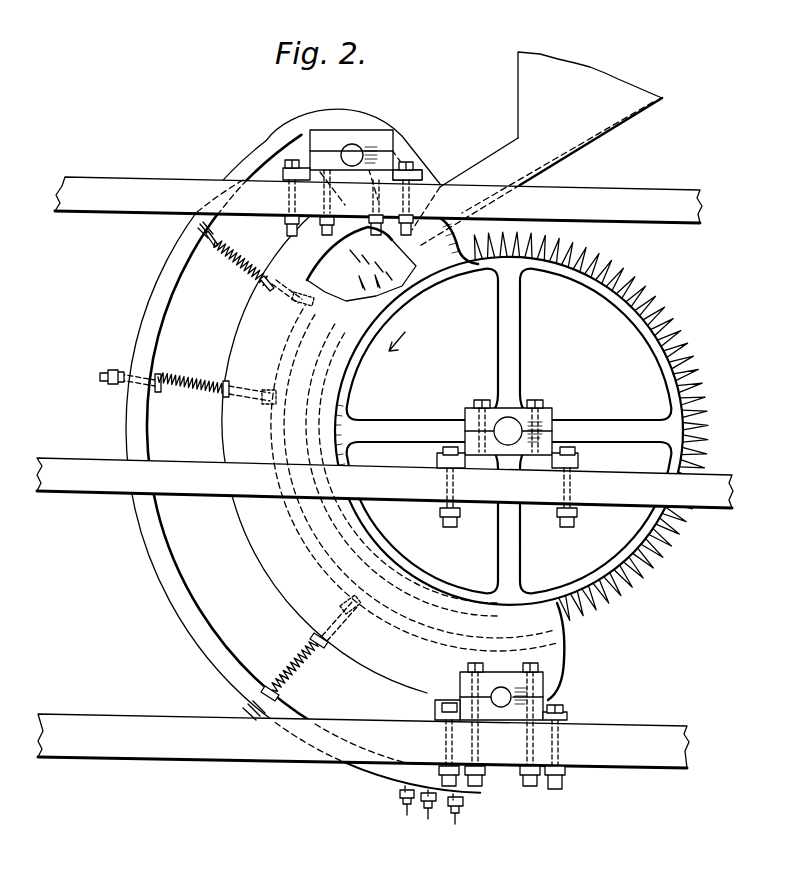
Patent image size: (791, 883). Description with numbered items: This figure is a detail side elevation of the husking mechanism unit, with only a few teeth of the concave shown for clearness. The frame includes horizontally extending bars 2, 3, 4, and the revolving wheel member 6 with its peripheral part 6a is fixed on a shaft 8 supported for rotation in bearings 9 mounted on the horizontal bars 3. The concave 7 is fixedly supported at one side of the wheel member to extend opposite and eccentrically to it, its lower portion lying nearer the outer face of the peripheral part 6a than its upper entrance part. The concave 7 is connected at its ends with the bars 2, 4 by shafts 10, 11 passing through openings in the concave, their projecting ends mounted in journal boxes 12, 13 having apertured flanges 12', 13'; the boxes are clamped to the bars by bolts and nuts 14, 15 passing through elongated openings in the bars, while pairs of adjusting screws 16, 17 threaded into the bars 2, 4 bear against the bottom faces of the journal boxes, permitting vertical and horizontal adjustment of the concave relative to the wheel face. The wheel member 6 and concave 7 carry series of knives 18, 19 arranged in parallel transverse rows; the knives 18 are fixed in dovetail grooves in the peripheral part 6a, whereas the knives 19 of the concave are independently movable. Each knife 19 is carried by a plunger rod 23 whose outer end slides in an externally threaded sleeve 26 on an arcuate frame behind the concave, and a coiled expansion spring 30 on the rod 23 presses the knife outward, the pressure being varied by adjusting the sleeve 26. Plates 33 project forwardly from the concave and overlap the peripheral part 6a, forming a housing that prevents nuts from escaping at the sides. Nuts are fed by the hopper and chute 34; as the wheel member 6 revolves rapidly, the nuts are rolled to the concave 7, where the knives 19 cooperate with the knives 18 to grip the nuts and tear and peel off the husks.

The horizontally extending bar 2 is at (378, 200).
The horizontal bar 3 is at (385, 483).
The horizontally extending bar 4 is at (363, 741).
The revolving wheel member 6 is at (513, 368).
The peripheral part 6a is at (660, 310).
The concave 7 is at (305, 268).
The shaft 8 is at (516, 425).
The bearings 9 is at (545, 442).
The shaft 10 is at (357, 149).
The shaft 11 is at (506, 688).
The journal box 12 is at (369, 132).
The apertured flange 12' is at (430, 164).
The journal box 13 is at (496, 714).
The apertured flange 13' is at (578, 708).
The bolts and nuts 14 is at (288, 160).
The bolts and nuts 15 is at (557, 704).
The adjusting screws 16 is at (351, 202).
The adjusting screws 17 is at (487, 778).
The knives 18 is at (392, 278).
The knives 19 is at (310, 300).
The plunger rod 23 is at (104, 376).
The sleeve 26 is at (400, 796).
The coiled expansion spring 30 is at (205, 396).
The plates 33 is at (387, 566).
The hopper and chute 34 is at (537, 149).